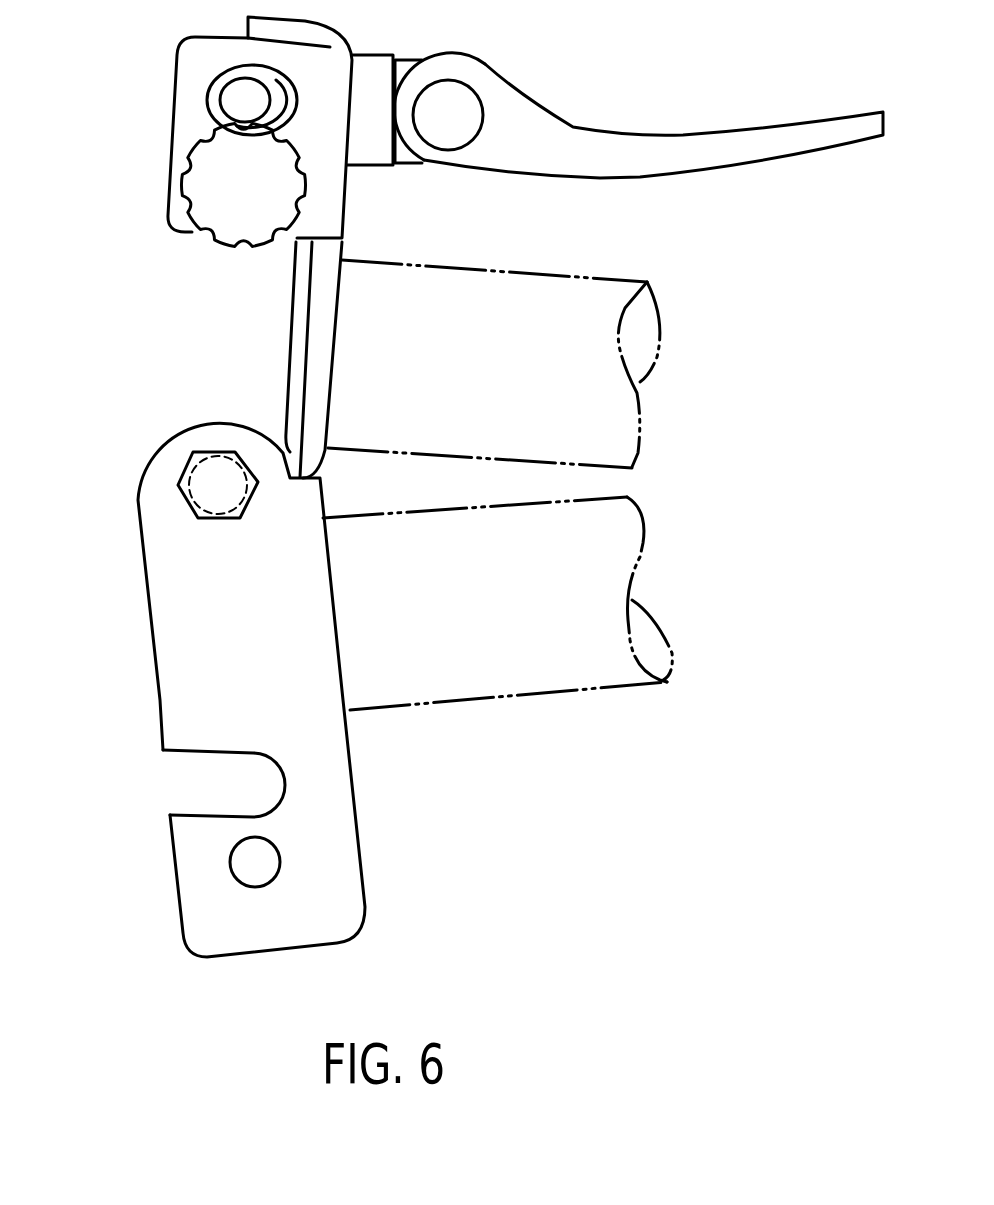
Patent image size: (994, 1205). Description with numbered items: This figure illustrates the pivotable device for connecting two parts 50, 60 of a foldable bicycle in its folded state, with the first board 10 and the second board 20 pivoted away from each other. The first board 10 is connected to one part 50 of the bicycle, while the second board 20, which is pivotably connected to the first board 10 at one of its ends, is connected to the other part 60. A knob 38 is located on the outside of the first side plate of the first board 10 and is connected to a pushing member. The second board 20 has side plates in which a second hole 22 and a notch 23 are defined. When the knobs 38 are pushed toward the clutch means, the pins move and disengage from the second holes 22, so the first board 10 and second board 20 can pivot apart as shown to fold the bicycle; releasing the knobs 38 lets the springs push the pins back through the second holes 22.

The first board 10 is at (327, 208).
The knob 38 is at (218, 197).
The part of a foldable bicycle 50 is at (577, 307).
The part of a foldable bicycle 60 is at (542, 667).
The second board 20 is at (328, 908).
The notch 23 is at (217, 783).
The second hole 22 is at (250, 870).